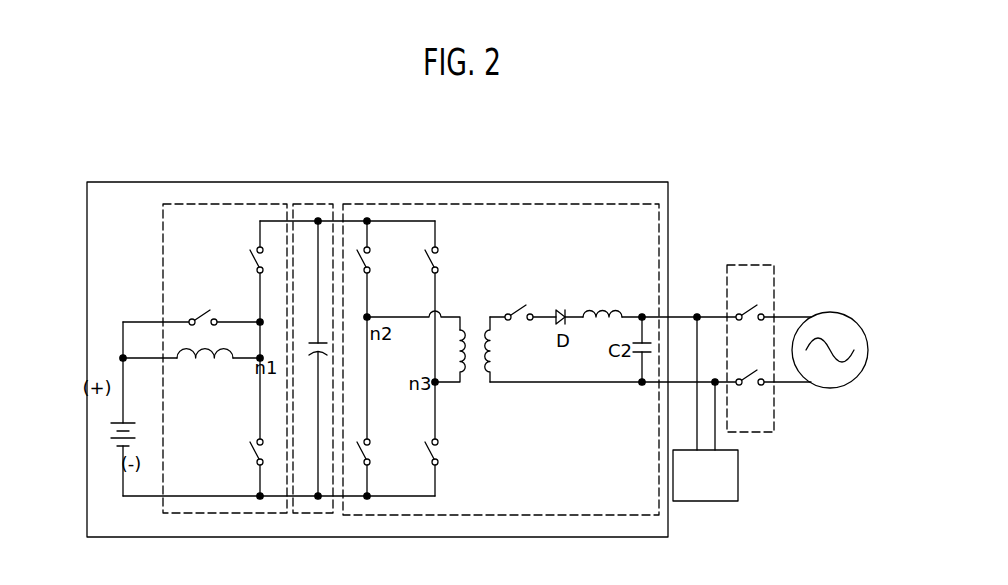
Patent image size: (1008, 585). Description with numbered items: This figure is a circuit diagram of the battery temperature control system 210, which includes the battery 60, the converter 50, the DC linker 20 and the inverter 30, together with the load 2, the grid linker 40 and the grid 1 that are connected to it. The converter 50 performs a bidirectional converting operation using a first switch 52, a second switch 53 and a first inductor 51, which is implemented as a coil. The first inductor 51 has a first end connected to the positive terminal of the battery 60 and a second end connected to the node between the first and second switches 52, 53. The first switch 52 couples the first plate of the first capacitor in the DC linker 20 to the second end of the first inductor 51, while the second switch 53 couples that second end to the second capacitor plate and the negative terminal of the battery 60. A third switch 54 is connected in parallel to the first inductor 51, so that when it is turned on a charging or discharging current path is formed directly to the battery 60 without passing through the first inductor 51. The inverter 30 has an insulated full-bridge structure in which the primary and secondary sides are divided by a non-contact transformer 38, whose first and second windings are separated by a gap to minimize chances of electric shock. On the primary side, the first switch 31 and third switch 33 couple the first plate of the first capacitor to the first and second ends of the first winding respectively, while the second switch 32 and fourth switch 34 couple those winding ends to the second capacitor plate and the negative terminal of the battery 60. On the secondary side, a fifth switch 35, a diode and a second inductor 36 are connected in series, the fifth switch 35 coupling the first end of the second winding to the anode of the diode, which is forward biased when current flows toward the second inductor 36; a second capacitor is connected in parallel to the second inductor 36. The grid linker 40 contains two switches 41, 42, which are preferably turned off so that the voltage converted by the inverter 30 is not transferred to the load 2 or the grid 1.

The grid 1 is at (830, 312).
The load 2 is at (706, 503).
The DC linker 20 is at (313, 204).
The inverter 30 is at (468, 204).
The first switch 31 is at (372, 264).
The second switch 32 is at (372, 452).
The third switch 33 is at (440, 264).
The fourth switch 34 is at (442, 452).
The fifth switch 35 is at (520, 307).
The second inductor 36 is at (606, 285).
The non-contact transformer 38 is at (477, 380).
The grid linker 40 is at (750, 265).
The switch 41 is at (755, 309).
The switch 42 is at (752, 391).
The converter 50 is at (226, 204).
The first inductor 51 is at (205, 366).
The first switch 52 is at (254, 260).
The second switch 53 is at (252, 452).
The third switch 54 is at (207, 313).
The battery 60 is at (107, 433).
The temperature control system 210 is at (381, 182).